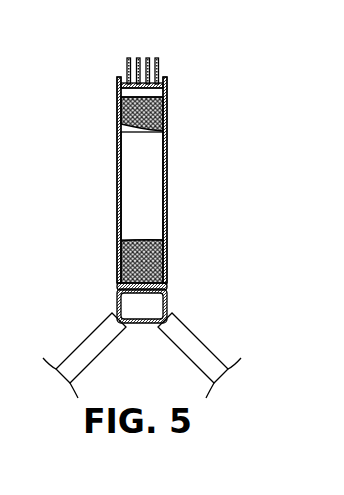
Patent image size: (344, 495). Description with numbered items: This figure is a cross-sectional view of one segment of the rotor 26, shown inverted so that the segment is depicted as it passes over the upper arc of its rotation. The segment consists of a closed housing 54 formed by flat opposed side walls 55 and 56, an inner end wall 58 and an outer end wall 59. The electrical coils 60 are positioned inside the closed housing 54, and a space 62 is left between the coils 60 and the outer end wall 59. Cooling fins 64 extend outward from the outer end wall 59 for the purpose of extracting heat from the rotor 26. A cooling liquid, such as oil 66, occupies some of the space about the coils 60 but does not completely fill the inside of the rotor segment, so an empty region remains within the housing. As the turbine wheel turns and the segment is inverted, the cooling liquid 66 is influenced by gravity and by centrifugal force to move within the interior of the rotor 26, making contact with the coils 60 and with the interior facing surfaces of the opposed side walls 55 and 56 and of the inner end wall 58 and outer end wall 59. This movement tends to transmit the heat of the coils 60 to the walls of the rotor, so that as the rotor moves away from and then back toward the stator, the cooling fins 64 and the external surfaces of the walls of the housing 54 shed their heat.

The rotor 26 is at (153, 189).
The closed housing 54 is at (116, 136).
The side wall 55 is at (117, 166).
The side wall 56 is at (168, 164).
The inner end wall 58 is at (118, 294).
The outer end wall 59 is at (167, 79).
The electrical coils 60 is at (150, 127).
The space 62 is at (126, 91).
The cooling fins 64 is at (137, 61).
The cooling liquid 66 is at (167, 91).